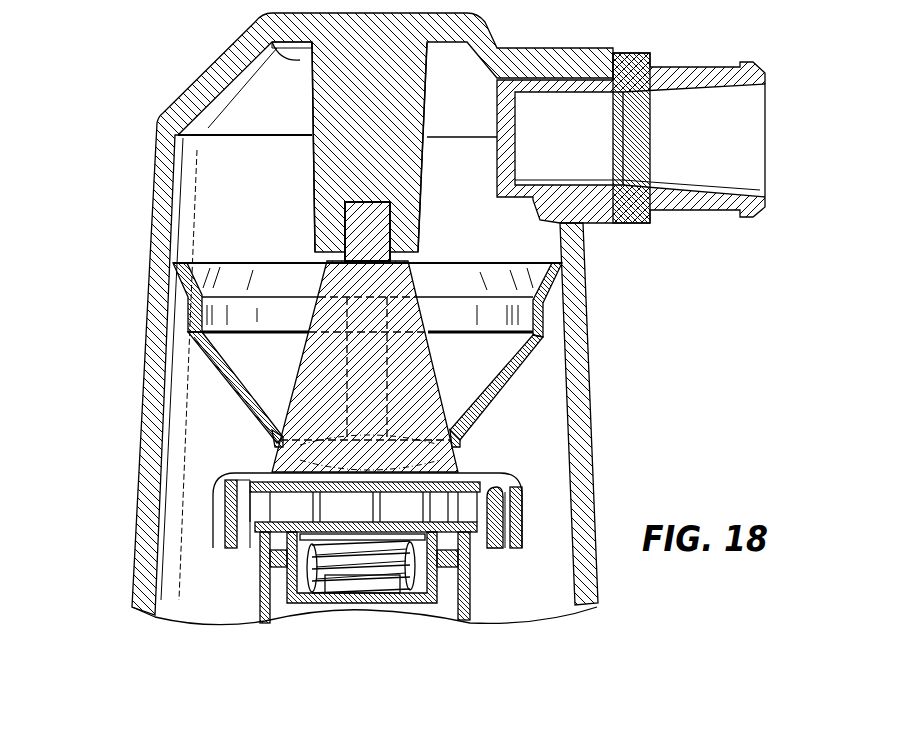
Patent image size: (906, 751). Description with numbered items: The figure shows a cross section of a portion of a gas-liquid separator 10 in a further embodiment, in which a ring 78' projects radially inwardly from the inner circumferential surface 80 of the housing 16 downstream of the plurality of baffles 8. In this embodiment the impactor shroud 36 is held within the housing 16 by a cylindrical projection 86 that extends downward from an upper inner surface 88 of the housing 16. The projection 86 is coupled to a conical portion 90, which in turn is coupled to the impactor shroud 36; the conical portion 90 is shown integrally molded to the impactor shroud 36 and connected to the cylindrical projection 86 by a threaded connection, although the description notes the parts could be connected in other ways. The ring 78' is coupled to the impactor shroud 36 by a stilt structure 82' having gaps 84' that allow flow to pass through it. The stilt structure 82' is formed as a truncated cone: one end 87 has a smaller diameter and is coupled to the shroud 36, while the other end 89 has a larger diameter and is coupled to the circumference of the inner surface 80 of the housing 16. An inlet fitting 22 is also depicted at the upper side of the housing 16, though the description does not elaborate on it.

The gas-liquid separator 10 is at (91, 95).
The upper inner surface 88 is at (278, 64).
The inner circumferential surface 80 is at (193, 198).
The cylindrical projection 86 is at (313, 178).
The inlet nipple 22 is at (707, 66).
The housing 16 is at (590, 340).
The ring 78' is at (311, 297).
The conical portion 90 is at (302, 363).
The smaller-diameter end of stilt structure 87 is at (266, 461).
The larger-diameter end of stilt structure 89 is at (534, 255).
The stilt structure 82' is at (553, 391).
The gaps 84' is at (381, 337).
The impactor shroud 36 is at (527, 530).
The baffles 8 is at (497, 558).